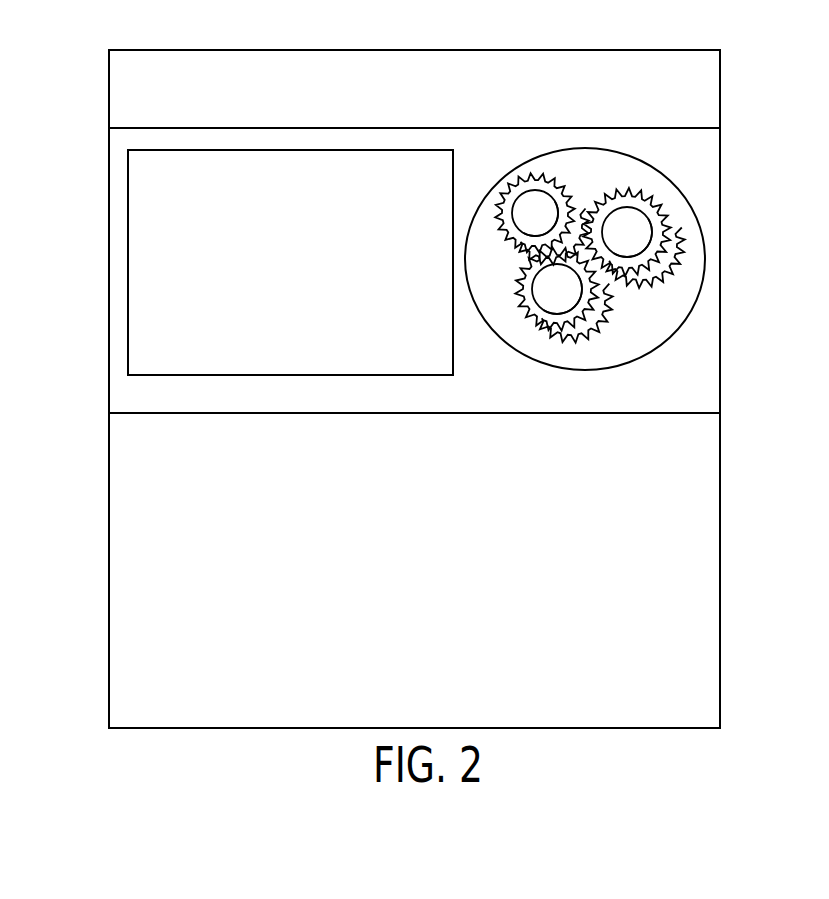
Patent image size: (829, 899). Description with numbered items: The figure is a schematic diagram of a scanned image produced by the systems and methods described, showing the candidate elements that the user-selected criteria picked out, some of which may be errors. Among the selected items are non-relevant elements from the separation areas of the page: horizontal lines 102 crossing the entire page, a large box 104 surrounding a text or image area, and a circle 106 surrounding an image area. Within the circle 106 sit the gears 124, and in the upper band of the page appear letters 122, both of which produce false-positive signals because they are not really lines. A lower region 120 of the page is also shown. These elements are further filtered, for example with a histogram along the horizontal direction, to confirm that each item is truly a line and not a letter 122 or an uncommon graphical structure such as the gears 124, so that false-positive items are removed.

The horizontal or vertical lines 102 is at (171, 127).
The large box 104 is at (127, 233).
The circle 106 is at (705, 242).
The lower panel 120 is at (108, 563).
The letter 122 is at (315, 74).
The gears 124 is at (673, 220).